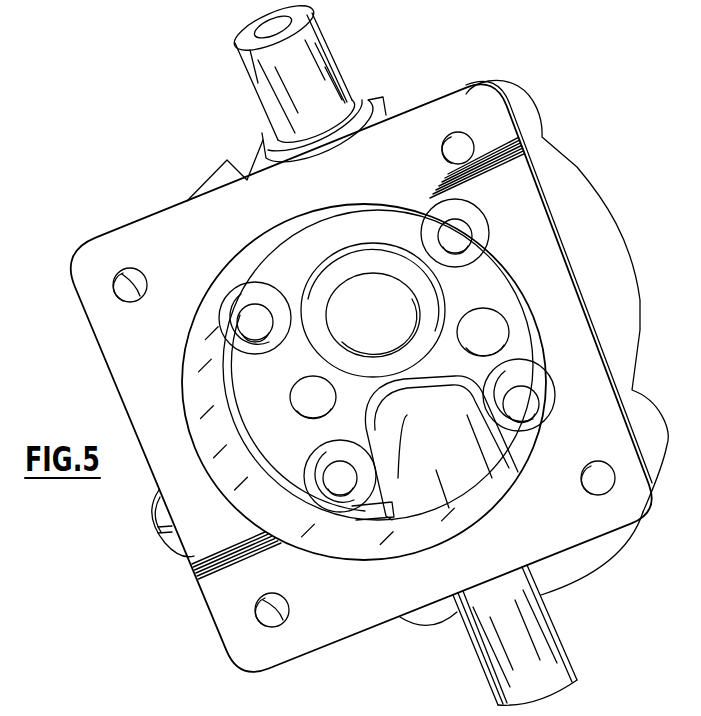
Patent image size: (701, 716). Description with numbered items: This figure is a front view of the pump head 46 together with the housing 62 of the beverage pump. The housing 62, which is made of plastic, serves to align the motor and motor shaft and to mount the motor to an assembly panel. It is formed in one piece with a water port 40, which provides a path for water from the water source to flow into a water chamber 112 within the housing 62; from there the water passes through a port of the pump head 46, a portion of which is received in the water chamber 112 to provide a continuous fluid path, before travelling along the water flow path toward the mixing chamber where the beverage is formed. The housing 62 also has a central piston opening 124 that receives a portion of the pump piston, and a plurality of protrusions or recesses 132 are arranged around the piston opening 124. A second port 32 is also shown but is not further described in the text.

The inlet port tube 32 is at (306, 53).
The water port 40 is at (510, 645).
The pump head 46 is at (597, 236).
The housing 62 is at (195, 527).
The water chamber 112 is at (422, 480).
The piston opening 124 is at (362, 286).
The protrusions or recesses 132 is at (240, 298).